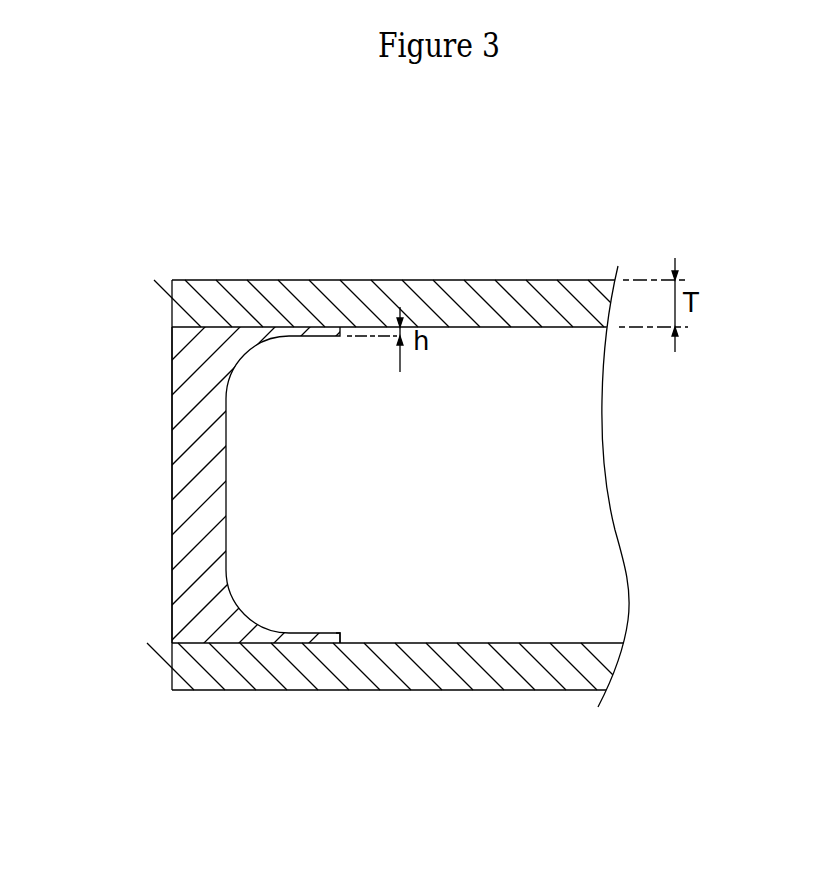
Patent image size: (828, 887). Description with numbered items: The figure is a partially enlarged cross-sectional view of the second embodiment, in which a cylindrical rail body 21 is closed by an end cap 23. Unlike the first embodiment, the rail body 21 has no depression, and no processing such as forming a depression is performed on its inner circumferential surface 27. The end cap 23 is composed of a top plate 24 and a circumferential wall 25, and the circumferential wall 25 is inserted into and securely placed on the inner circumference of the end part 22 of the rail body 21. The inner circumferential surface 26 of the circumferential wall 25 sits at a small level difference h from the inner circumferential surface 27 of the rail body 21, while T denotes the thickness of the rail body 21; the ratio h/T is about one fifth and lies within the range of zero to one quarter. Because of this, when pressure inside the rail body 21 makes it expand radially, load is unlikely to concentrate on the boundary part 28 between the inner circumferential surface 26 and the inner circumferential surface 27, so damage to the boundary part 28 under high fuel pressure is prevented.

The rail body 21 is at (513, 272).
The end part 22 is at (203, 280).
The end cap 23 is at (153, 463).
The top plate 24 is at (172, 525).
The circumferential wall 25 is at (313, 636).
The inner circumferential surface of the circumferential wall 26 is at (338, 334).
The inner circumferential surface of the rail body 27 is at (469, 643).
The boundary part 28 is at (343, 640).